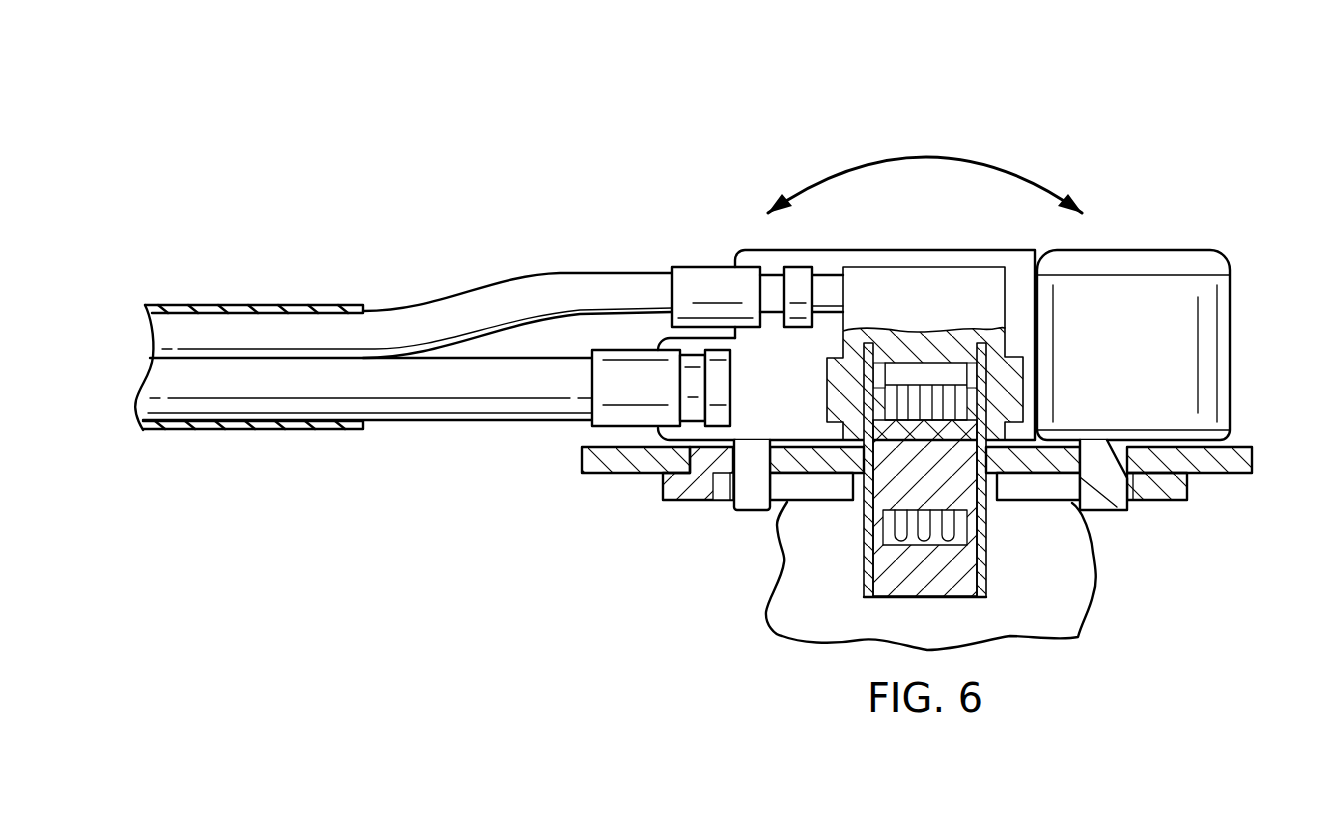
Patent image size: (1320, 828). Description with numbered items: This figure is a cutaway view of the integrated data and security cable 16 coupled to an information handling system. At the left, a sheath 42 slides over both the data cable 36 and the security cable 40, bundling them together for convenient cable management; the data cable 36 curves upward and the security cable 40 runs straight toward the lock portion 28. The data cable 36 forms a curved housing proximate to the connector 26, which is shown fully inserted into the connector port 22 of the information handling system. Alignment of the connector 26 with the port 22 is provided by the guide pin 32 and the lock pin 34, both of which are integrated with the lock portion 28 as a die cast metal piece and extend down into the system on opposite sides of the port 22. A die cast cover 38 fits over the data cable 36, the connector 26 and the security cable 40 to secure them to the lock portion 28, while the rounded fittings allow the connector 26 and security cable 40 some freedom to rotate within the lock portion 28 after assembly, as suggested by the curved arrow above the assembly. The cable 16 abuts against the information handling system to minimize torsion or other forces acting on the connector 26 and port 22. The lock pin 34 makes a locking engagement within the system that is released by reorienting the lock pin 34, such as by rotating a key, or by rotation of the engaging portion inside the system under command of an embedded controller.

The integrated data and security cable 16 is at (608, 120).
The connector port 22 is at (987, 580).
The connector 26 is at (958, 483).
The lock portion 28 is at (1232, 352).
The guide pin 32 is at (751, 510).
The lock pin 34 is at (1122, 510).
The data cable 36 is at (494, 290).
The die cast cover 38 is at (925, 250).
The security cable 40 is at (461, 421).
The sheath 42 is at (236, 305).